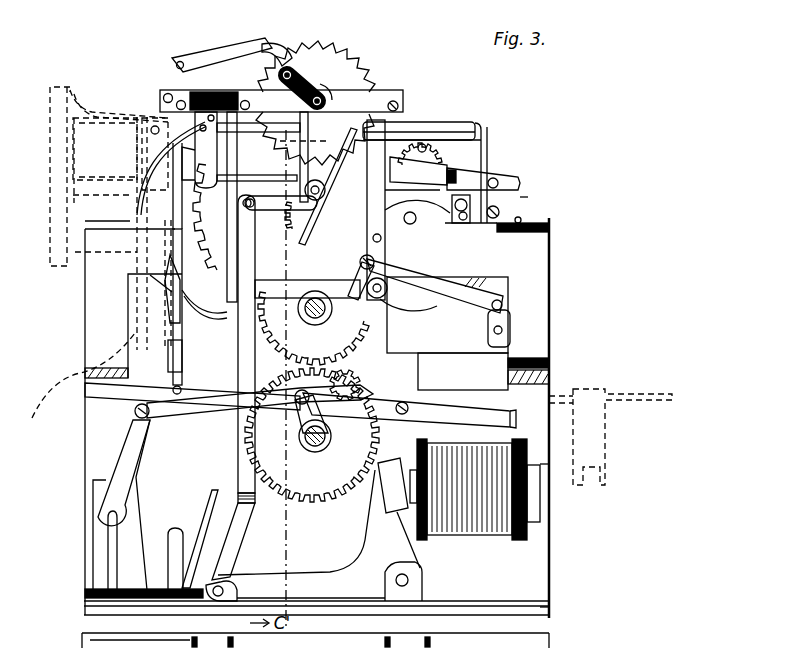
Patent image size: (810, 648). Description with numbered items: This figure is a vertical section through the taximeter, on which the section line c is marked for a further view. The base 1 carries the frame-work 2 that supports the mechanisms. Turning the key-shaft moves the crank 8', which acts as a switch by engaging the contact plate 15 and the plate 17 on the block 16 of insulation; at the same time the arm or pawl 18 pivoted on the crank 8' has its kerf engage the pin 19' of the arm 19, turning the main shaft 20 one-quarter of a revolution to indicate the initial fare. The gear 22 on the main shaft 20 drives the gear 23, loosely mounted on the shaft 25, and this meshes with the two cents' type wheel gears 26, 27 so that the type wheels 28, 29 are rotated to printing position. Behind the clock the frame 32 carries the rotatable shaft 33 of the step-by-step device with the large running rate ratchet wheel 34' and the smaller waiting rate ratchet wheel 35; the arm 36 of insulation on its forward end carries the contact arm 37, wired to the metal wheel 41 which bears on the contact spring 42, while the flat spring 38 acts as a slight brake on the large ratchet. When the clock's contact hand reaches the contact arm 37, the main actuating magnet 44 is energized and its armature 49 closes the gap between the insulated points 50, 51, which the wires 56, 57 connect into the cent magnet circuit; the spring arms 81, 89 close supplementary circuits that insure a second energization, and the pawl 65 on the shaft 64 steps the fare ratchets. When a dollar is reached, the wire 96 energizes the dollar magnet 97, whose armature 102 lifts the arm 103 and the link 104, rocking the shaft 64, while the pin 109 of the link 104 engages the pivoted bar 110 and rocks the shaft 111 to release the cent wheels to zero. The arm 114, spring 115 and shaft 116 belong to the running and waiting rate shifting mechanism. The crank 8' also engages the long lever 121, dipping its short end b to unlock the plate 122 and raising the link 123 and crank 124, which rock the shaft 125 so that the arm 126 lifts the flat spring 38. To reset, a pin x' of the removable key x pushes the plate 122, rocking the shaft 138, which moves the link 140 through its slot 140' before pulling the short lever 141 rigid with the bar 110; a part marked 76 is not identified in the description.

The base 1 is at (506, 578).
The frame-work 2 is at (563, 391).
The crank 8' is at (133, 505).
The contact plate 15 is at (182, 550).
The block of insulation 16 is at (85, 592).
The plate 17 is at (108, 535).
The arm or pawl 18 is at (207, 410).
The arm 19 is at (304, 438).
The pin 19' is at (354, 380).
The main shaft 20 is at (331, 436).
The gear 22 is at (312, 435).
The gear 23 is at (313, 328).
The shaft 25 is at (312, 313).
The cents' type wheel gear 26 is at (90, 228).
The cents' type wheel gear 27 is at (418, 215).
The cent type wheel 28 is at (160, 197).
The cent type wheel 29 is at (447, 315).
The frame 32 is at (394, 101).
The rotatable shaft 33 is at (342, 124).
The running rate ratchet wheel 34' is at (327, 100).
The waiting rate ratchet wheel 35 is at (312, 146).
The arm of insulation 36 is at (290, 72).
The contact arm 37 is at (295, 122).
The flat spring 38 is at (316, 143).
The metal ring or wheel 41 is at (322, 91).
The contact spring 42 is at (213, 88).
The main actuating magnet 44 is at (105, 149).
The armature 49 is at (230, 195).
The insulated point 50 is at (247, 300).
The insulated point 51 is at (137, 324).
The wire 56 is at (140, 378).
The wire 57 is at (84, 371).
The shaft 64 is at (330, 186).
The pawl 65 is at (398, 118).
The lever 76 is at (268, 46).
The spring arm 81 is at (492, 223).
The spring arm 89 is at (520, 215).
The wire 96 is at (524, 197).
The dollar magnet 97 is at (466, 540).
The armature 102 is at (388, 472).
The arm 103 is at (287, 572).
The link 104 is at (262, 262).
The pin 109 is at (182, 346).
The pivoted bar 110 is at (307, 289).
The shaft 111 is at (380, 298).
The arm 114 is at (490, 175).
The spring 115 is at (488, 128).
The shaft 116 is at (445, 137).
The long lever 121 is at (424, 404).
The plate 122 is at (508, 380).
The link 123 is at (178, 364).
The crank 124 is at (168, 158).
The rocking shaft 125 is at (222, 187).
The arm 126 is at (255, 215).
The shaft 138 is at (538, 324).
The link 140 is at (446, 282).
The slot 140' is at (398, 244).
The short lever 141 is at (385, 268).
The short end of long lever b is at (514, 428).
The section line c— c is at (260, 210).
The removable key x is at (625, 431).
The pin of key x' is at (607, 372).